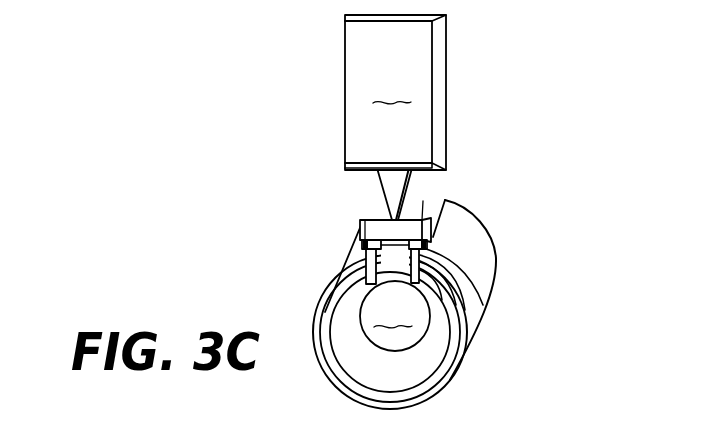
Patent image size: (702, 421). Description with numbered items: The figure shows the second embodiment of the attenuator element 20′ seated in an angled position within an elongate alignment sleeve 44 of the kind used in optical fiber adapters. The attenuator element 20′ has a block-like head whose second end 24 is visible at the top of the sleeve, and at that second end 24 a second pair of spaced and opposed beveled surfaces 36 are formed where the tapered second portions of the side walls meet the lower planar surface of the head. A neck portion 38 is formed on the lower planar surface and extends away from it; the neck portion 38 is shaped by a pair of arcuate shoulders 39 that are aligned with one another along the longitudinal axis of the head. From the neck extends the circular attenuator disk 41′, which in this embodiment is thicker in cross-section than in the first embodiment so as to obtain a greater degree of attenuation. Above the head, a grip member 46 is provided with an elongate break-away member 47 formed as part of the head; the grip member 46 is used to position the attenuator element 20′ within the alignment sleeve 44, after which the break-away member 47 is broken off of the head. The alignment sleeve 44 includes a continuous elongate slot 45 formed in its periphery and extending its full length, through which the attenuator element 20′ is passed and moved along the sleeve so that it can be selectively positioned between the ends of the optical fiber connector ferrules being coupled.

The attenuator element 20′ is at (327, 217).
The second end 24 is at (360, 228).
The beveled surfaces 36 is at (346, 262).
The neck portion 38 is at (480, 305).
The arcuate shoulders 39 is at (465, 276).
The attenuator disk 41′ is at (395, 316).
The alignment sleeve 44 is at (449, 378).
The slot 45 is at (423, 201).
The grip member 46 is at (395, 92).
The break-away member 47 is at (393, 182).